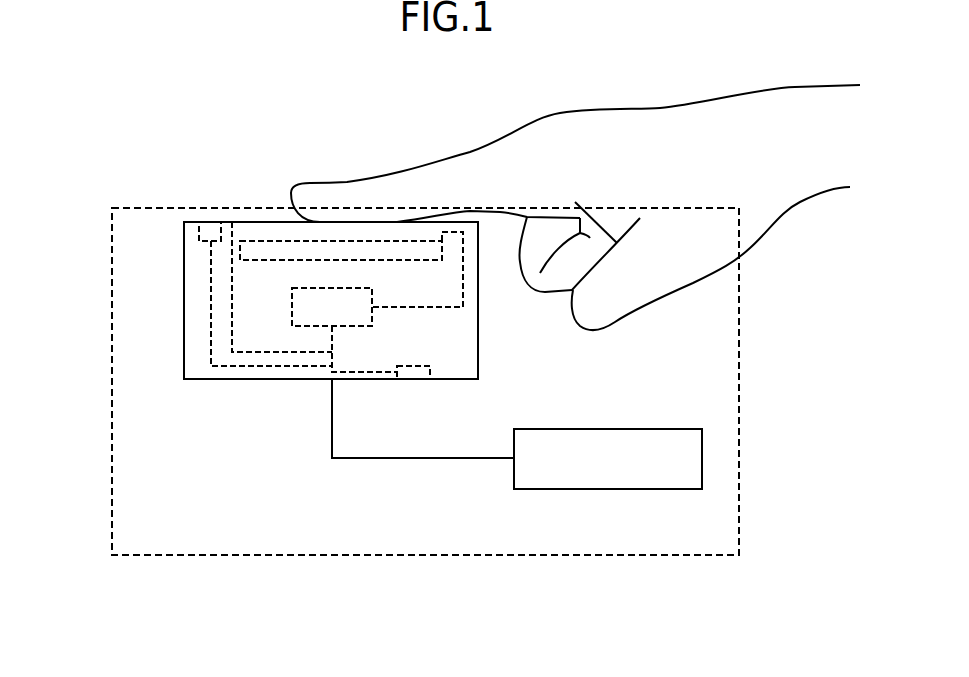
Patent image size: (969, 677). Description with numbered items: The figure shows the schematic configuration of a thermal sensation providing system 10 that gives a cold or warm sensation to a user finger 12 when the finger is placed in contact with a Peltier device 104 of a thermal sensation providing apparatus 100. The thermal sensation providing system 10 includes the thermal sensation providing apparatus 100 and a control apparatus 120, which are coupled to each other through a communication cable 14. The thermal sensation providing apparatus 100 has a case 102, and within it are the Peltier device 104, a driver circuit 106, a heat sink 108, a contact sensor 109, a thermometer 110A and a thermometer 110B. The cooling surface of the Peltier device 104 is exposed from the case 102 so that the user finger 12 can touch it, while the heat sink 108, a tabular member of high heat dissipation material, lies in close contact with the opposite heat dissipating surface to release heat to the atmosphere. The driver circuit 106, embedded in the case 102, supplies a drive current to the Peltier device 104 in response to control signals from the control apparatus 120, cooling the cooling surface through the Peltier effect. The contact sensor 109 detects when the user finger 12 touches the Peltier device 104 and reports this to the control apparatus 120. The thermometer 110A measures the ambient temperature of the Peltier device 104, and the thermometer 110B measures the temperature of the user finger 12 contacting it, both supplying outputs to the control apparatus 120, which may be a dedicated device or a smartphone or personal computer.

The thermal sensation providing system 10 is at (112, 363).
The user finger 12 is at (340, 183).
The communication cable 14 is at (385, 458).
The thermal sensation providing apparatus 100 is at (200, 385).
The case 102 is at (478, 342).
The Peltier device 104 is at (273, 233).
The driver circuit 106 is at (362, 326).
The heat sink 108 is at (263, 260).
The contact sensor 109 is at (210, 222).
The thermometer 110A is at (413, 372).
The thermometer 110B is at (232, 224).
The control apparatus 120 is at (617, 429).